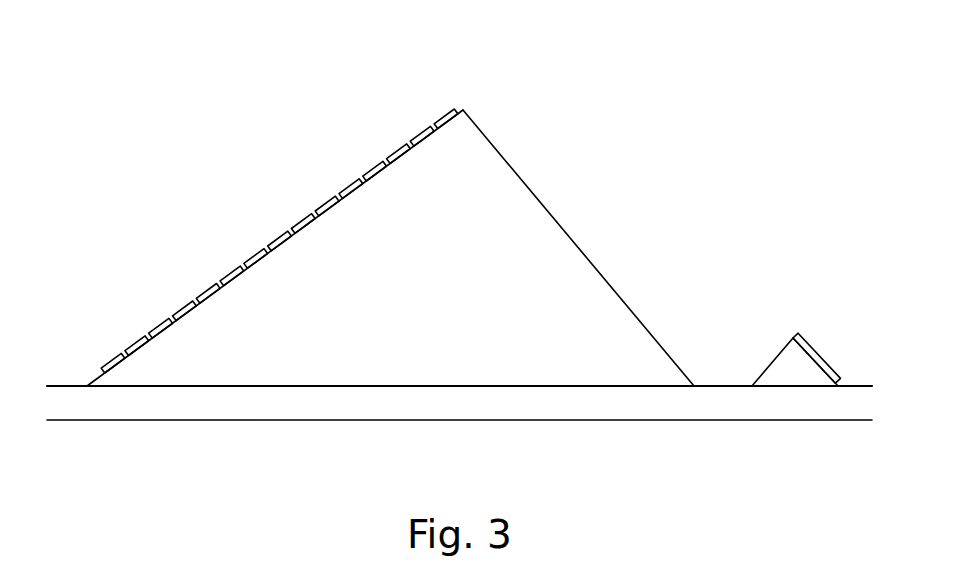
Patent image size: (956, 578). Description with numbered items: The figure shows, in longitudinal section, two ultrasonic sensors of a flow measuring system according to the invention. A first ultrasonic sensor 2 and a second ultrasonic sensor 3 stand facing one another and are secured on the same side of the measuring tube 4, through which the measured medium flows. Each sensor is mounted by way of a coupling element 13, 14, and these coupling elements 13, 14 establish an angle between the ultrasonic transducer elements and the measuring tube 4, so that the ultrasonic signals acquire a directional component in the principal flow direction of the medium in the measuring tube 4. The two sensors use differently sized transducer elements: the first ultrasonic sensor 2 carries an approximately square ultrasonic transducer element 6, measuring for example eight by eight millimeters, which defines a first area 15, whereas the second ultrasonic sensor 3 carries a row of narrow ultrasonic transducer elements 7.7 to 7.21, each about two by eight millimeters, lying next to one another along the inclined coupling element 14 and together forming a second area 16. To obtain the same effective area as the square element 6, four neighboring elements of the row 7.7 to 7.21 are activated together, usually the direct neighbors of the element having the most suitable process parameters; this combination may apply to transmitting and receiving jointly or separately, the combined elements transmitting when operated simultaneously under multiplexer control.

The first ultrasonic sensor 2 is at (751, 344).
The second ultrasonic sensor 3 is at (390, 244).
The measuring tube 4 is at (168, 400).
The electromechanical ultrasonic transducer element 6 is at (808, 347).
The electromechanical ultrasonic transducer element 7.7 is at (117, 352).
The electromechanical ultrasonic transducer element 7.21 is at (443, 110).
The coupling element 13 is at (775, 356).
The coupling element 14 is at (588, 272).
The first area 15 is at (799, 364).
The second area 16 is at (359, 194).